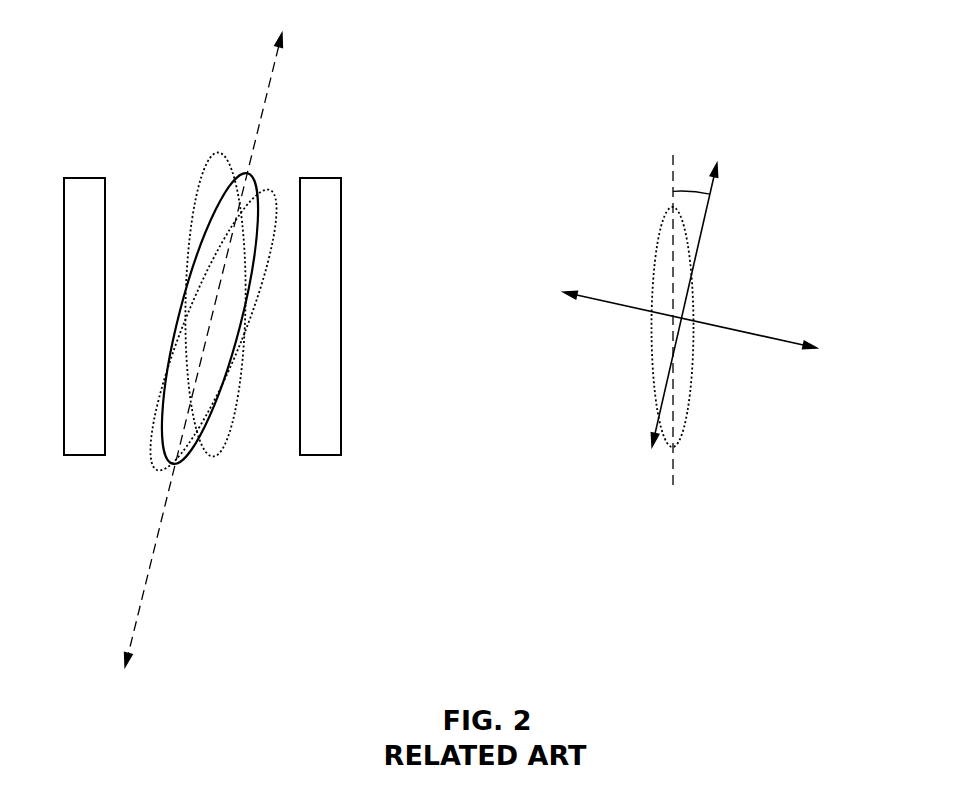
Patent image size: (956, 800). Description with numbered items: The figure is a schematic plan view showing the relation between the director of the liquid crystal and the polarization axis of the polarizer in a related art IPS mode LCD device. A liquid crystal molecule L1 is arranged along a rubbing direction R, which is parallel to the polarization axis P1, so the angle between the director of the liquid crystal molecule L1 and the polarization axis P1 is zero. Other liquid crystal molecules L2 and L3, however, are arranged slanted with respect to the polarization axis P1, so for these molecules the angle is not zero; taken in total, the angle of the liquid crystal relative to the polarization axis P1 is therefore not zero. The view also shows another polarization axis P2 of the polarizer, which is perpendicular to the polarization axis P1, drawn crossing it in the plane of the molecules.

The liquid crystal molecule L1 is at (250, 173).
The liquid crystal molecule L2 is at (272, 190).
The liquid crystal molecule L3 is at (218, 152).
The rubbing direction R is at (207, 339).
The polarization axis P1 is at (690, 293).
The polarization axis P2 is at (703, 326).